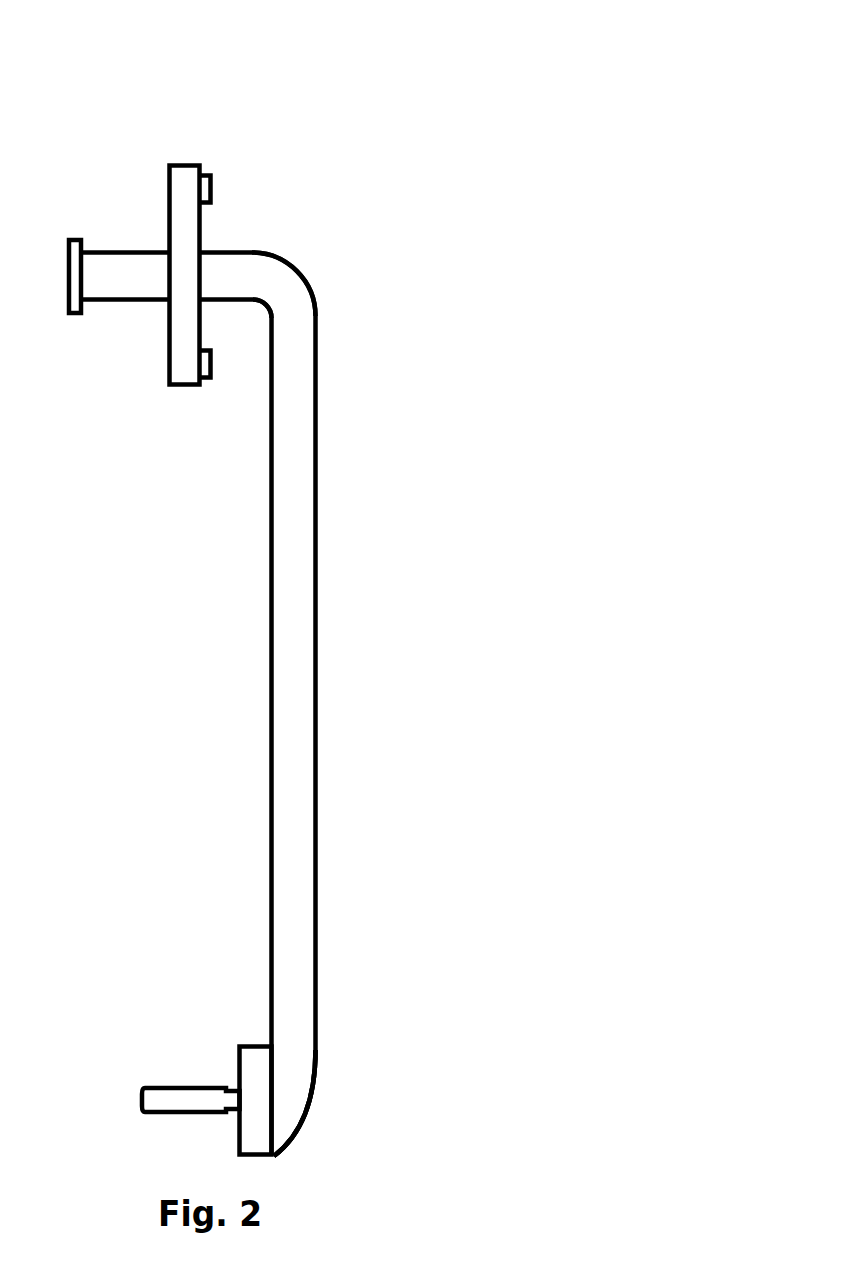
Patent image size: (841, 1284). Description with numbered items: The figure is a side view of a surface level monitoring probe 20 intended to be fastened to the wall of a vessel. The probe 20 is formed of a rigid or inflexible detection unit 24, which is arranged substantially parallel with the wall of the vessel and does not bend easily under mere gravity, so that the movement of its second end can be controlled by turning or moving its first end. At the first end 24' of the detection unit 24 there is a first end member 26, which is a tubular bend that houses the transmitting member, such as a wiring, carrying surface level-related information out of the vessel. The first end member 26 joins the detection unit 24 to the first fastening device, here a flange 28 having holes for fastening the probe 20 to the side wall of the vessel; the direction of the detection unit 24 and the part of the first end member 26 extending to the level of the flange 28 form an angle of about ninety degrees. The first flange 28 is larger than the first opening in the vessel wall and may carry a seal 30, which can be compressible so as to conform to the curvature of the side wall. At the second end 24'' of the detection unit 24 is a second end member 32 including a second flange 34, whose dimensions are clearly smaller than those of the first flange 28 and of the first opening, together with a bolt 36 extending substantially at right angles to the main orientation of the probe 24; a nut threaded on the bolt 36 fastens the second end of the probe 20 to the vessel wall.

The surface level monitoring probe 20 is at (380, 178).
The detection unit 24 is at (216, 705).
The first end of the detection unit 24' is at (306, 228).
The second end of the detection unit 24'' is at (393, 1103).
The first end member 26 is at (143, 273).
The first flange 28 is at (187, 197).
The seal 30 is at (215, 182).
The second end member 32 is at (298, 1078).
The second flange 34 is at (247, 1088).
The bolt 36 is at (207, 1115).